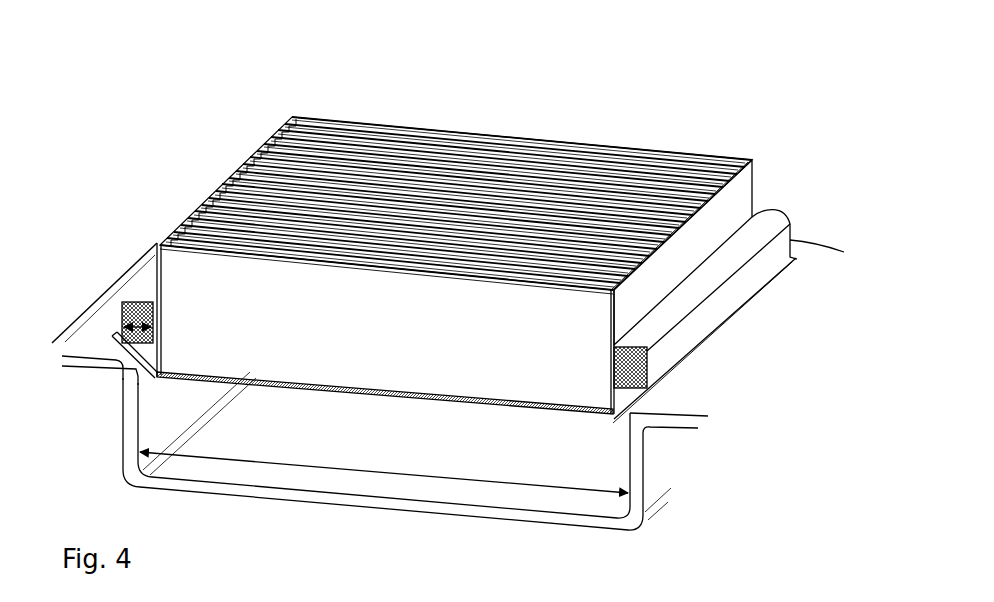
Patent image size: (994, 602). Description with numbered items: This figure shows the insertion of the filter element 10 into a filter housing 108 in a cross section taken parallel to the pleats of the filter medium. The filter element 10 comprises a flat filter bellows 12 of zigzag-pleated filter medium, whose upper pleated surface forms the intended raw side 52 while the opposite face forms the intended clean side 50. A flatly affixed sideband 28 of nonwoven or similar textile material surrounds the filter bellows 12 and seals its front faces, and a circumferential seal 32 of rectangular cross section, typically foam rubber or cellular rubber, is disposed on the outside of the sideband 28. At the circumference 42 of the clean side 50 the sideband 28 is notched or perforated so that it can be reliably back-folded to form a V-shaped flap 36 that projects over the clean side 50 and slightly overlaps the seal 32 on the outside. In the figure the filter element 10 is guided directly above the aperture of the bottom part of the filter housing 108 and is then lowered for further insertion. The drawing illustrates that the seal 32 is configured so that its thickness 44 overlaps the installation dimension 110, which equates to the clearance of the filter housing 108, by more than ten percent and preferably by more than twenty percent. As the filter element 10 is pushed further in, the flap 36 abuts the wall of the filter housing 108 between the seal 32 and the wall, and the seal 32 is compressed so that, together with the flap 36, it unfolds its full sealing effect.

The filter element 10 is at (641, 138).
The filter bellows 12 is at (387, 165).
The raw side 52 is at (474, 186).
The sideband 28 is at (738, 218).
The seal 32 is at (137, 298).
The thickness of seal 44 is at (124, 314).
The flap 36 is at (122, 367).
The circumference of clean side 42 is at (155, 380).
The clean side 50 is at (432, 413).
The installation dimension 110 is at (315, 470).
The filter housing 108 is at (647, 487).